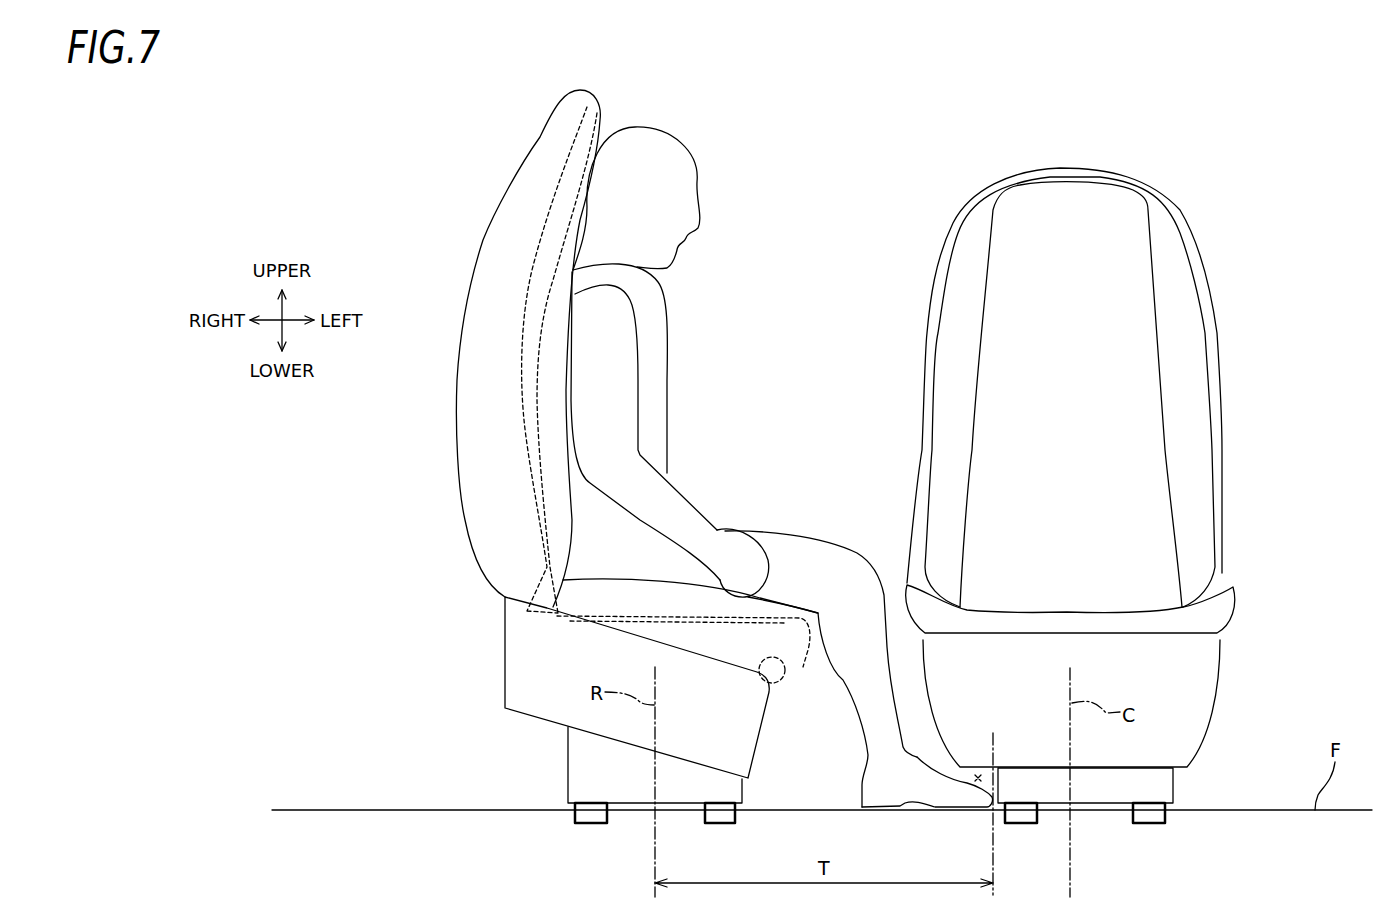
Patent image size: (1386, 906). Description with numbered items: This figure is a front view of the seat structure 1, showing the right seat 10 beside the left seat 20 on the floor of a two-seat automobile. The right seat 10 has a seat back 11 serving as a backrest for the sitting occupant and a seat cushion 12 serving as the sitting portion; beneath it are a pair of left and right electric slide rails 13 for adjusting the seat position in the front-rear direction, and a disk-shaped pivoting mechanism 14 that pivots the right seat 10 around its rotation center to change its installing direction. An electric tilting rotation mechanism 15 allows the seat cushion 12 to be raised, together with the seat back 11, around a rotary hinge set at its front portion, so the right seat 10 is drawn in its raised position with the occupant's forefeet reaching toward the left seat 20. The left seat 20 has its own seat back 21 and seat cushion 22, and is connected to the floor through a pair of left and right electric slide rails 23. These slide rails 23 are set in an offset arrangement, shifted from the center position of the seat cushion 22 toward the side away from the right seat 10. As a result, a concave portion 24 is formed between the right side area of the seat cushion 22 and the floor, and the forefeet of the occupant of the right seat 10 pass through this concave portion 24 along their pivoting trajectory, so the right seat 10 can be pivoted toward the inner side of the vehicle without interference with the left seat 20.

The seat structure 1 is at (362, 161).
The right seat 10 is at (511, 154).
The seat back 11 is at (470, 262).
The seat cushion 12 is at (683, 600).
The electric slide rails 13 is at (700, 812).
The pivoting mechanism 14 is at (595, 770).
The electric tilting rotation mechanism 15 is at (775, 660).
The left seat 20 is at (1191, 216).
The seat back 21 is at (1217, 332).
The seat cushion 22 is at (1205, 615).
The electric slide rails 23 is at (1150, 815).
The concave portion 24 is at (981, 770).